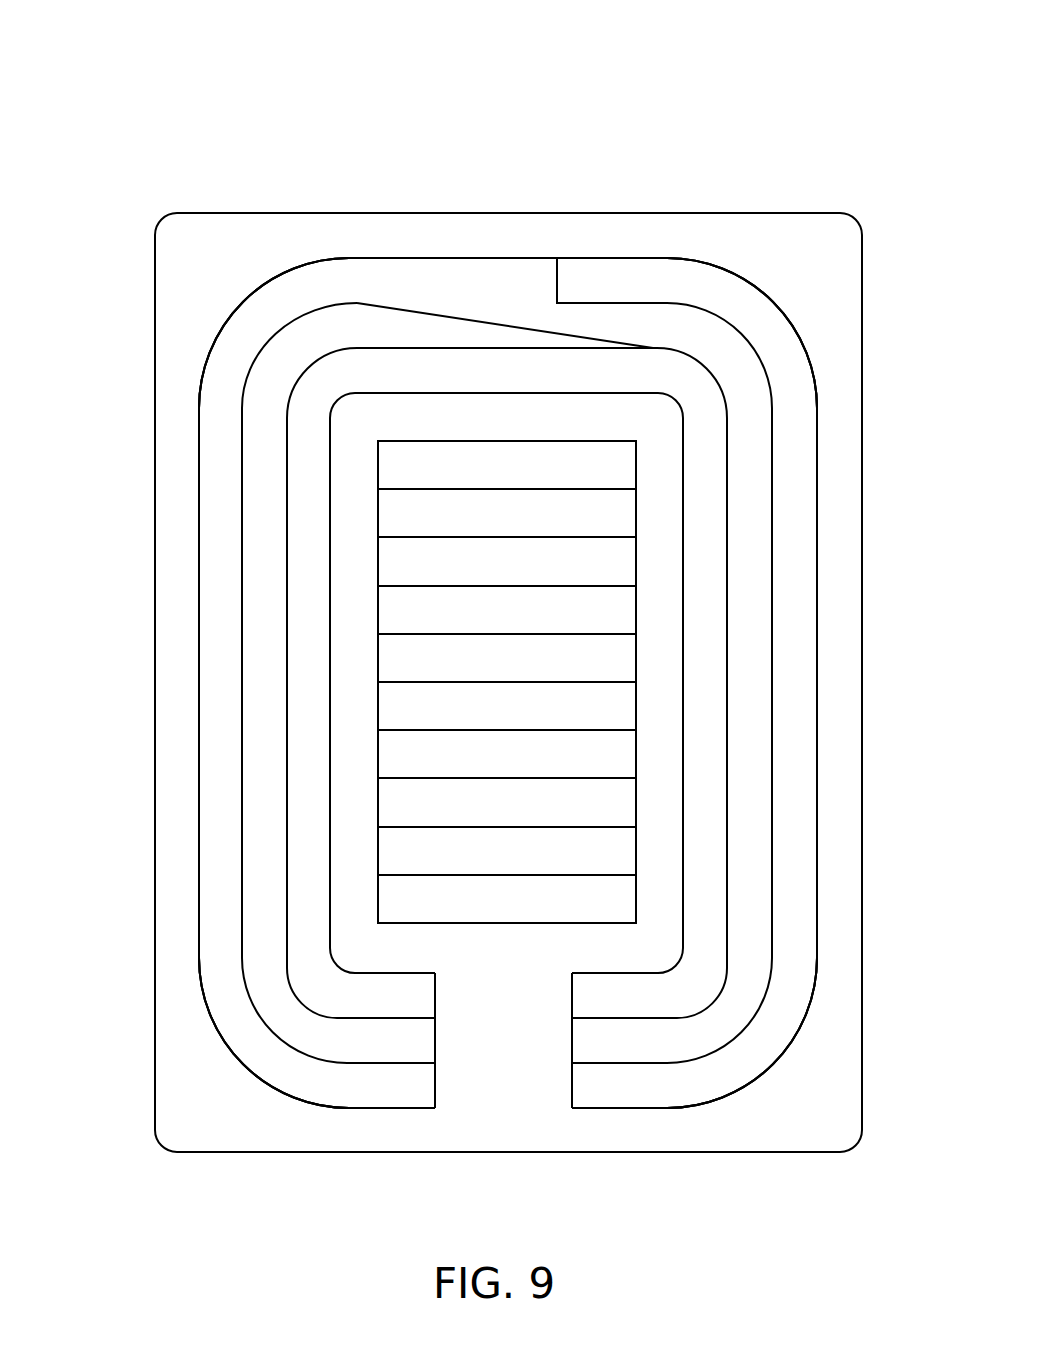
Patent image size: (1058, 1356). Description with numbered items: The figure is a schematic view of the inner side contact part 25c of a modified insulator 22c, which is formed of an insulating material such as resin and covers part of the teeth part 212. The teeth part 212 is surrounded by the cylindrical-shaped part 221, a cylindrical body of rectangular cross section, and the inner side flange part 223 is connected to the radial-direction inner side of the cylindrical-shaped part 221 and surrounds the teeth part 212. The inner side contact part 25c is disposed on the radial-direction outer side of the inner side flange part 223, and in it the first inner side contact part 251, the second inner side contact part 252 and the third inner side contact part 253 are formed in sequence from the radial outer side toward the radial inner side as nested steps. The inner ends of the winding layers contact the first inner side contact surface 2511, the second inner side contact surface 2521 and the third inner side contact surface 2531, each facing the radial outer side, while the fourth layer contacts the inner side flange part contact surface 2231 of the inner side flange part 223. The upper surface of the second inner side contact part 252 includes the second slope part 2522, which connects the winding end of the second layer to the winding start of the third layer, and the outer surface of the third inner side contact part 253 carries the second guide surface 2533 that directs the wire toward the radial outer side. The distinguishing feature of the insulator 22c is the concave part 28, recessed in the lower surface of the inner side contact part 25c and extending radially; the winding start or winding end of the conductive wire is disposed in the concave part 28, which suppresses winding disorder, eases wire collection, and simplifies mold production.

The insulator 22c is at (405, 148).
The inner side flange part 223 is at (198, 232).
The inner side flange part contact surface 2231 is at (845, 255).
The inner side contact part 25c is at (212, 745).
The third inner side contact part 253 is at (788, 868).
The third inner side contact surface 2531 is at (222, 644).
The second inner side contact part 252 is at (760, 815).
The second inner side contact surface 2521 is at (257, 581).
The second slope part 2522 is at (448, 315).
The second guide surface 2533 is at (610, 277).
The first inner side contact part 251 is at (697, 734).
The first inner side contact surface 2511 is at (303, 537).
The cylindrical-shaped part 221 is at (352, 875).
The teeth part 212 is at (617, 611).
The concave part 28 is at (502, 1045).